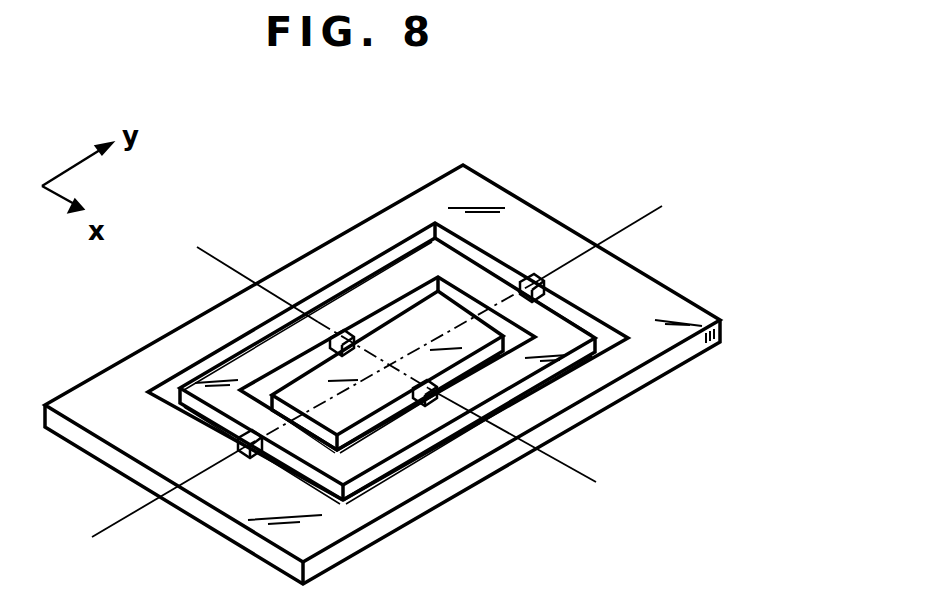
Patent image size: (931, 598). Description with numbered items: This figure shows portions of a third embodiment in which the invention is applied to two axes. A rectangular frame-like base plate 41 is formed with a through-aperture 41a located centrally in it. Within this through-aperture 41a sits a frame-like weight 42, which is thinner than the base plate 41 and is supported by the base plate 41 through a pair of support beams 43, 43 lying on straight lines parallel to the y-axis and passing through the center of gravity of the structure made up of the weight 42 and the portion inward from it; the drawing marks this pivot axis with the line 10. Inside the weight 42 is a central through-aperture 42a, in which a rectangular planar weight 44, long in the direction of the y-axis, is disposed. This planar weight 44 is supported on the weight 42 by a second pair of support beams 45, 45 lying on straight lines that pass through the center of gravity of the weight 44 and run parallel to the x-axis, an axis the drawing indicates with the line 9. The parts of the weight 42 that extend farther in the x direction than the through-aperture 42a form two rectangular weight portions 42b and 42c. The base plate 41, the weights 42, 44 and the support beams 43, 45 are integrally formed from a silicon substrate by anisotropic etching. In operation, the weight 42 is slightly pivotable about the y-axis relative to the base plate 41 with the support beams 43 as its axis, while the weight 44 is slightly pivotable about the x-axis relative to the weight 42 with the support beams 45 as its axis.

The base plate 41 is at (565, 235).
The through-aperture 41a is at (398, 242).
The frame-like weight 42 is at (468, 273).
The central through-aperture 42a is at (527, 360).
The rectangular weight portion 42b is at (225, 372).
The rectangular weight portion 42c is at (386, 456).
The support beams 43 is at (541, 288).
The planar weight 44 is at (397, 327).
The support beams 45 is at (330, 333).
The x-axis of rotation 9 is at (395, 368).
The y-axis of rotation 10 is at (375, 379).